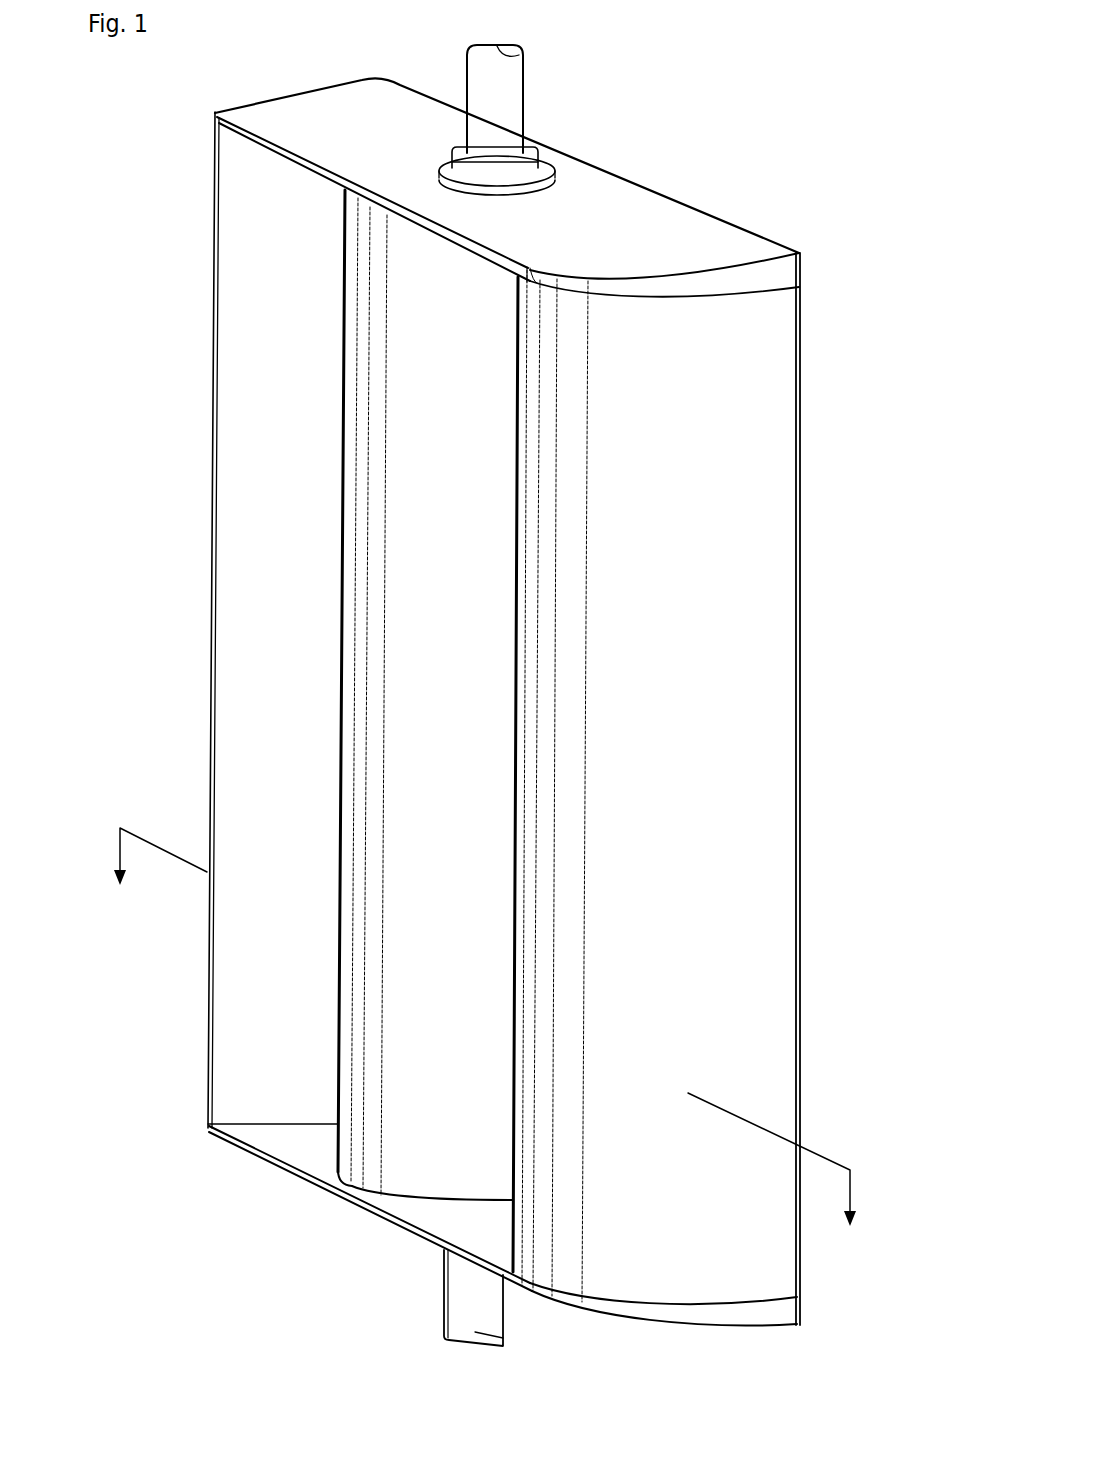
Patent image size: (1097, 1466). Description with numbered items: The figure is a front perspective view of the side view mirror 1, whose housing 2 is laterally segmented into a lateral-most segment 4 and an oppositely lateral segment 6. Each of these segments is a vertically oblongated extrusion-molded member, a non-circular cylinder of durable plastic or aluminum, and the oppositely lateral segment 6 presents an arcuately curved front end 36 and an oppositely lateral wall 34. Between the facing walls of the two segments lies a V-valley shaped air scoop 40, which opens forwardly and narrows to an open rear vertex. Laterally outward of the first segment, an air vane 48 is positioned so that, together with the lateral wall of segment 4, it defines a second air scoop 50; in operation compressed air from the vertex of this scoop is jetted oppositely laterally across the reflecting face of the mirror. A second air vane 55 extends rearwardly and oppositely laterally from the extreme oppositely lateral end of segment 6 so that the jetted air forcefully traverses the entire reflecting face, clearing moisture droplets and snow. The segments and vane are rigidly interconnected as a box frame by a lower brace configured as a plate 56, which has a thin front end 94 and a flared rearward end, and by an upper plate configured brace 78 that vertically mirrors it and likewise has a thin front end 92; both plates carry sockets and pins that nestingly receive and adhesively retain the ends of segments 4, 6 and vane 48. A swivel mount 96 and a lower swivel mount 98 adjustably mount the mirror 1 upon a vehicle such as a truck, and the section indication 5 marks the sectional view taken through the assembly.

The side view mirror 1 is at (704, 104).
The housing 2 is at (278, 727).
The lateral-most segment 4 is at (357, 962).
The section line 5 is at (484, 1041).
The oppositely lateral segment 6 is at (540, 1042).
The oppositely lateral wall 34 is at (670, 866).
The arcuately curved front end 36 is at (558, 1222).
The air scoop 40 is at (442, 1013).
The air vane 48 is at (225, 578).
The second air scoop 50 is at (265, 905).
The second air vane 55 is at (784, 536).
The plate 56 is at (273, 1143).
The upper plate configured brace 78 is at (673, 227).
The front end 92 is at (277, 153).
The front end 94 is at (335, 1188).
The swivel mount 96 is at (530, 140).
The lower swivel mount 98 is at (460, 1303).